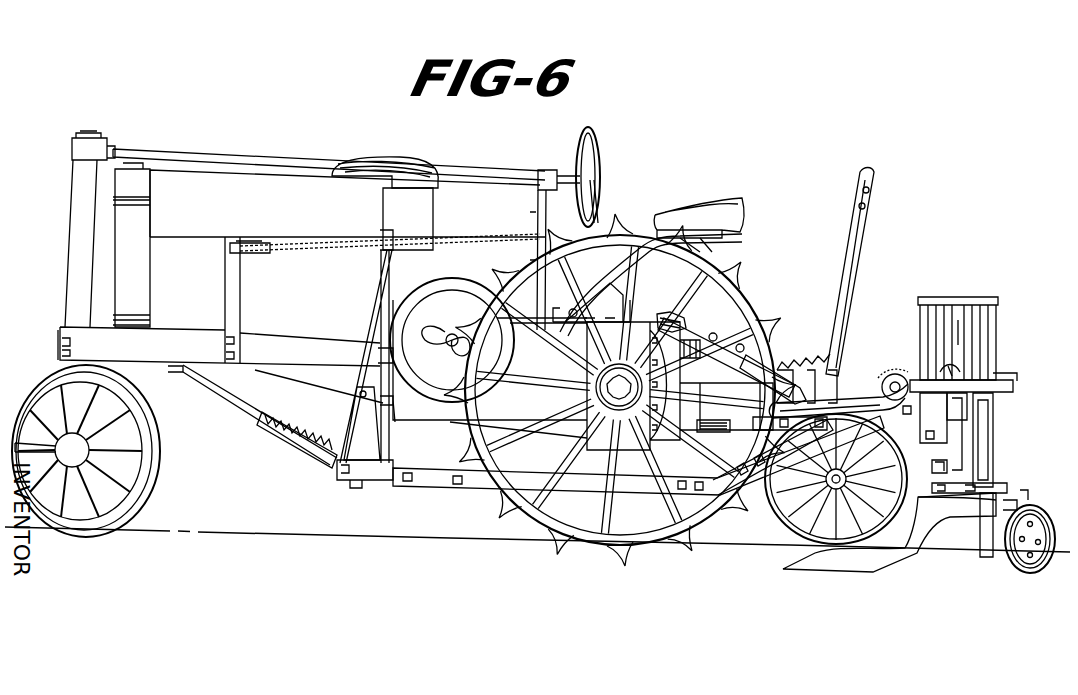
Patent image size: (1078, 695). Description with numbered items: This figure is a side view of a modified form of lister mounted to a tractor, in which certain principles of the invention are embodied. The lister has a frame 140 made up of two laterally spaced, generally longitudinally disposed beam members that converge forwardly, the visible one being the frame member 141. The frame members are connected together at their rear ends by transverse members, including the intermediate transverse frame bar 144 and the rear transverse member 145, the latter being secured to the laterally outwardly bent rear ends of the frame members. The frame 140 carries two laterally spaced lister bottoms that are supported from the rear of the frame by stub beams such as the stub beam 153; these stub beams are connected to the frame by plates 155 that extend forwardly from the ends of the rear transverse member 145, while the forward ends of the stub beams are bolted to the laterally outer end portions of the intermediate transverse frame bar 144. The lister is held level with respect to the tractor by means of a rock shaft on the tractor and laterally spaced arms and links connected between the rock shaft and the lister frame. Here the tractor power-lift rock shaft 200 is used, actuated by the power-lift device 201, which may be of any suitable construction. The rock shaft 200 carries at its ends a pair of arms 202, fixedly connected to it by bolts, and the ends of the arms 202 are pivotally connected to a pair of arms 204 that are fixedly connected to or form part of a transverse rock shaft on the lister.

The frame 140 is at (588, 509).
The frame member 141 is at (505, 483).
The intermediate transverse frame bar 144 is at (742, 422).
The rear transverse member 145 is at (953, 427).
The stub beam 153 is at (806, 360).
The plate 155 is at (920, 413).
The power-lift rock shaft 200 is at (666, 314).
The power-lift device 201 is at (666, 370).
The arm 202 is at (700, 332).
The arm 204 is at (746, 360).